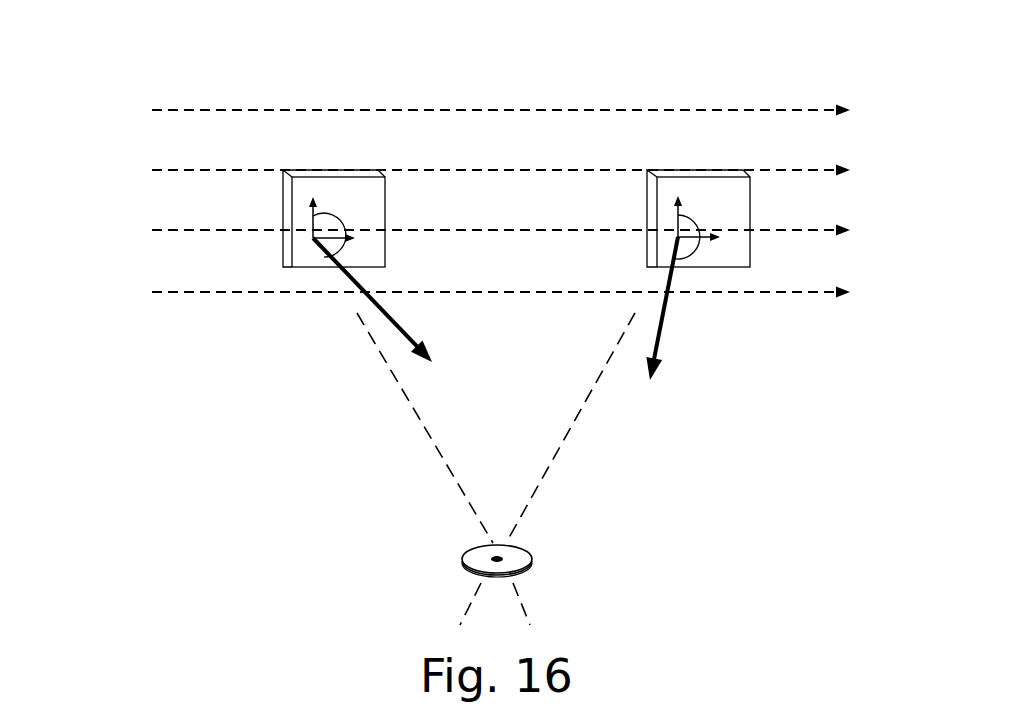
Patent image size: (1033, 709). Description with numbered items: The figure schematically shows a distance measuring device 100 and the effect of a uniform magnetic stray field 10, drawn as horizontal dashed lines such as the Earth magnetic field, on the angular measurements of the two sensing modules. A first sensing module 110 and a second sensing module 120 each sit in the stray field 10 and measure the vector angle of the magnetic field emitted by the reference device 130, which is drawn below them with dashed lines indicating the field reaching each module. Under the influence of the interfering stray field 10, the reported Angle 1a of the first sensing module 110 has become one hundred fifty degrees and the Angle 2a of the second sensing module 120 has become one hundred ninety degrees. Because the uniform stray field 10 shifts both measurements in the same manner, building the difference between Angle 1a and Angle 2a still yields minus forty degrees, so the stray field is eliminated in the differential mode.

The uniform magnetic stray field 10 is at (790, 108).
The distance measuring device 100 is at (126, 113).
The first sensing module 110 is at (327, 257).
The second sensing module 120 is at (681, 261).
The reference device 130 is at (461, 560).
The Angle 1a is at (335, 229).
The Angle 2a is at (700, 230).